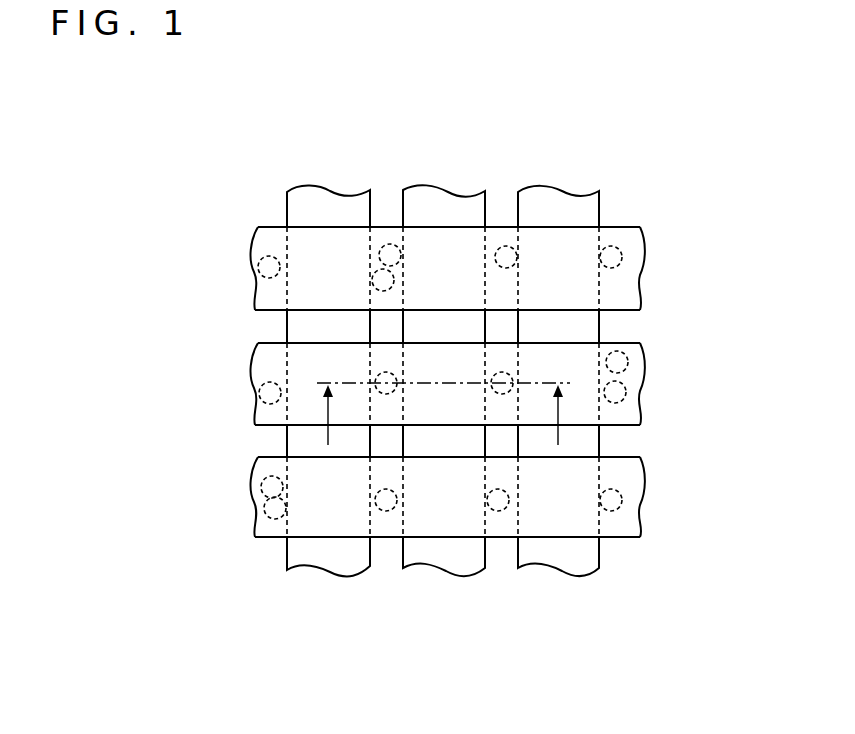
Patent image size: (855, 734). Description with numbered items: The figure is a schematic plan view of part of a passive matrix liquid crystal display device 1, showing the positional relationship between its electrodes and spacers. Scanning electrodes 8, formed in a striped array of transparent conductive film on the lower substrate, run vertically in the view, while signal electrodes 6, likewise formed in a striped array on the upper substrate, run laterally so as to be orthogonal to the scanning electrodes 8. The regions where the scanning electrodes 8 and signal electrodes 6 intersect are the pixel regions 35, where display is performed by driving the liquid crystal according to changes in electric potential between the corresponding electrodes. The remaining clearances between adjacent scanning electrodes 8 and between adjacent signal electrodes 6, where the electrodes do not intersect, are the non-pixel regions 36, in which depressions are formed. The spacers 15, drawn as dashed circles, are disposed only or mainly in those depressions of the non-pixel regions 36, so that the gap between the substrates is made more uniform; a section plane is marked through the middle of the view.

The liquid crystal display device 1 is at (618, 161).
The signal electrodes 6 is at (641, 278).
The scanning electrodes 8 is at (336, 197).
The spacers 15 is at (381, 223).
The pixel regions 35 is at (586, 230).
The non-pixel regions 36 is at (500, 205).